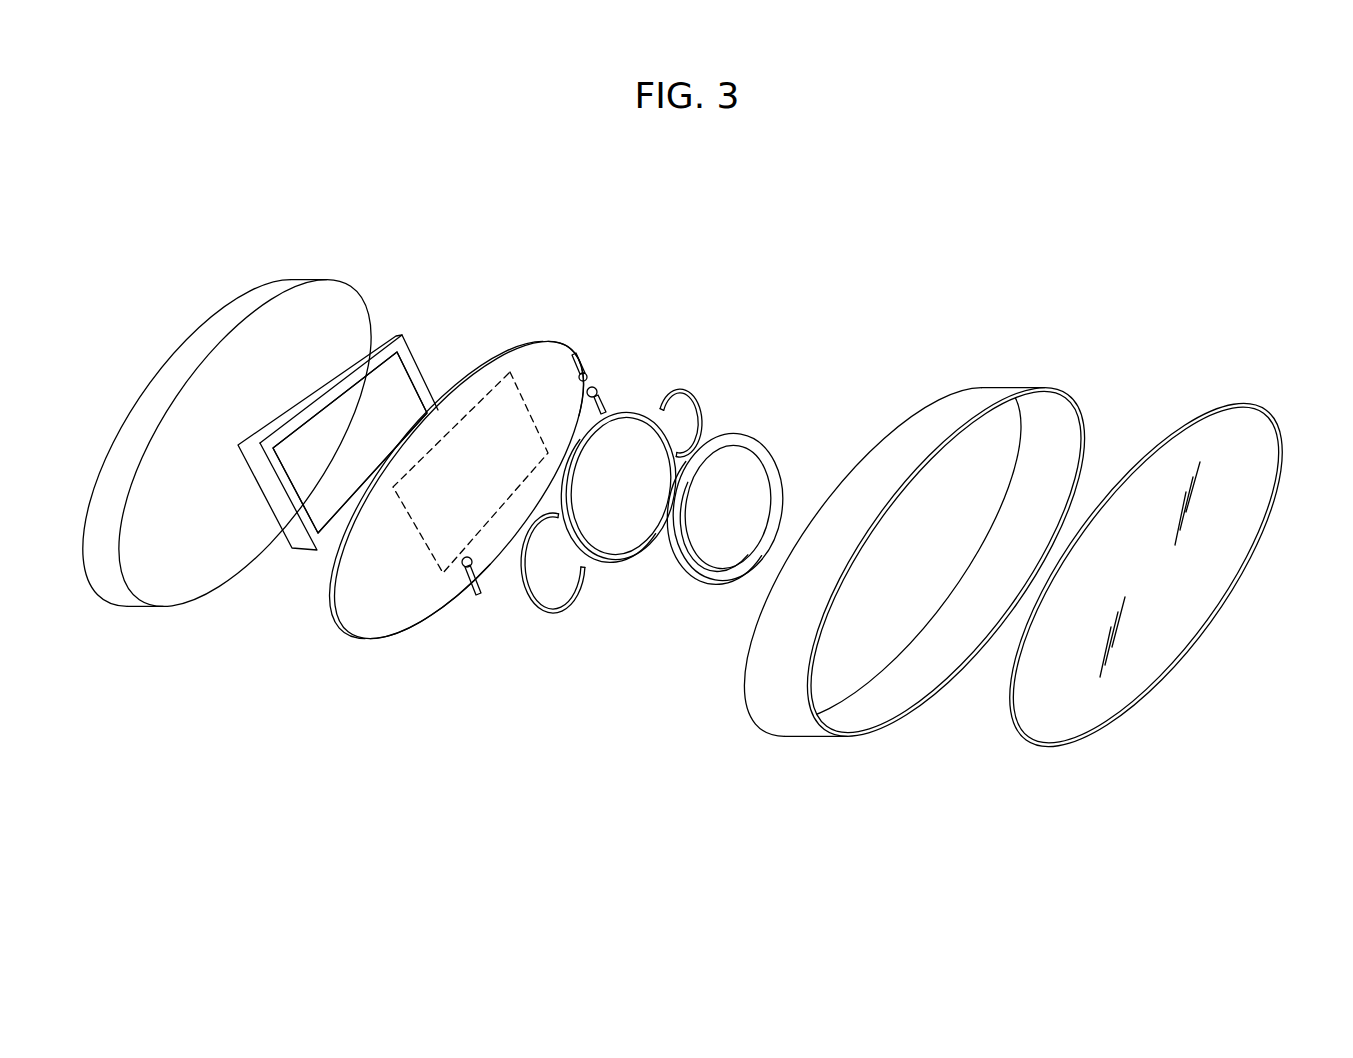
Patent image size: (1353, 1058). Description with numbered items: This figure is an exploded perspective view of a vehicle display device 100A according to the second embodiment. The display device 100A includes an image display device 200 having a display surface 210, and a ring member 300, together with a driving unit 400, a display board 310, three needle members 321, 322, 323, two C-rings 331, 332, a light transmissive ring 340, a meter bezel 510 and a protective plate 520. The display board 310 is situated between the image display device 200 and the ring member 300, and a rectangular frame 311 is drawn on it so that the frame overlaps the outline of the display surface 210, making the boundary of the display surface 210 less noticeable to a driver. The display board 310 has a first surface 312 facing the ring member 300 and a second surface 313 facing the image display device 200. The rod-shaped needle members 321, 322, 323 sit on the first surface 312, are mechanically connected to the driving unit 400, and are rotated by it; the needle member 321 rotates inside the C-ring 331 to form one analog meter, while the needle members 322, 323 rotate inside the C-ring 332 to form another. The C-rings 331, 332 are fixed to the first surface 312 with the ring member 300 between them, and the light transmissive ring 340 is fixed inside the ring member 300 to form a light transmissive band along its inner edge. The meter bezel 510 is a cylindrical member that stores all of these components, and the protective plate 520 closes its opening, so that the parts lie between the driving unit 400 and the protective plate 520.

The display device 100A is at (794, 259).
The image display device 200 is at (374, 328).
The display surface 210 is at (313, 462).
The ring member 300 is at (625, 561).
The display board 310 is at (481, 362).
The rectangular frame 311 is at (418, 556).
The first surface 312 is at (550, 358).
The second surface 313 is at (365, 612).
The needle member 321 is at (482, 597).
The needle member 322 is at (588, 352).
The needle member 323 is at (603, 402).
The C-ring 331 is at (562, 612).
The C-ring 332 is at (697, 408).
The light transmissive ring 340 is at (705, 580).
The driving unit 400 is at (302, 279).
The meter bezel 510 is at (797, 722).
The protective plate 520 is at (1068, 712).